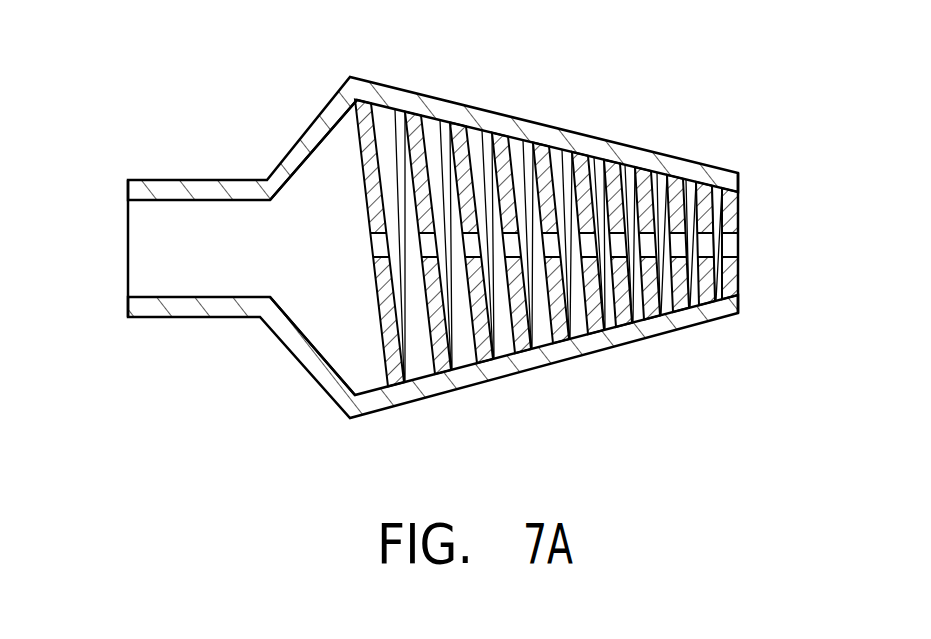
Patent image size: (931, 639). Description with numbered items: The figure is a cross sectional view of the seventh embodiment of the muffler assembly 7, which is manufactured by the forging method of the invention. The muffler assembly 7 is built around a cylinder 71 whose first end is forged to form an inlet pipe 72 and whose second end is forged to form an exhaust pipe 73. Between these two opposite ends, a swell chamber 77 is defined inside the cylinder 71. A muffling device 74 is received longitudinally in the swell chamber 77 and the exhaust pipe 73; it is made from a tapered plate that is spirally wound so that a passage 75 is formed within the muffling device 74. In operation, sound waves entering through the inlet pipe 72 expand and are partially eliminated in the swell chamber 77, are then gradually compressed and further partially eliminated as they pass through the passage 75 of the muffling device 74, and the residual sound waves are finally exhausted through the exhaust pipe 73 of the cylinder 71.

The muffler assembly 7 is at (628, 140).
The cylinder 71 is at (313, 362).
The inlet pipe 72 is at (127, 240).
The exhaust pipe 73 is at (742, 218).
The muffling device 74 is at (323, 110).
The passage 75 is at (387, 130).
The swell chamber 77 is at (325, 195).